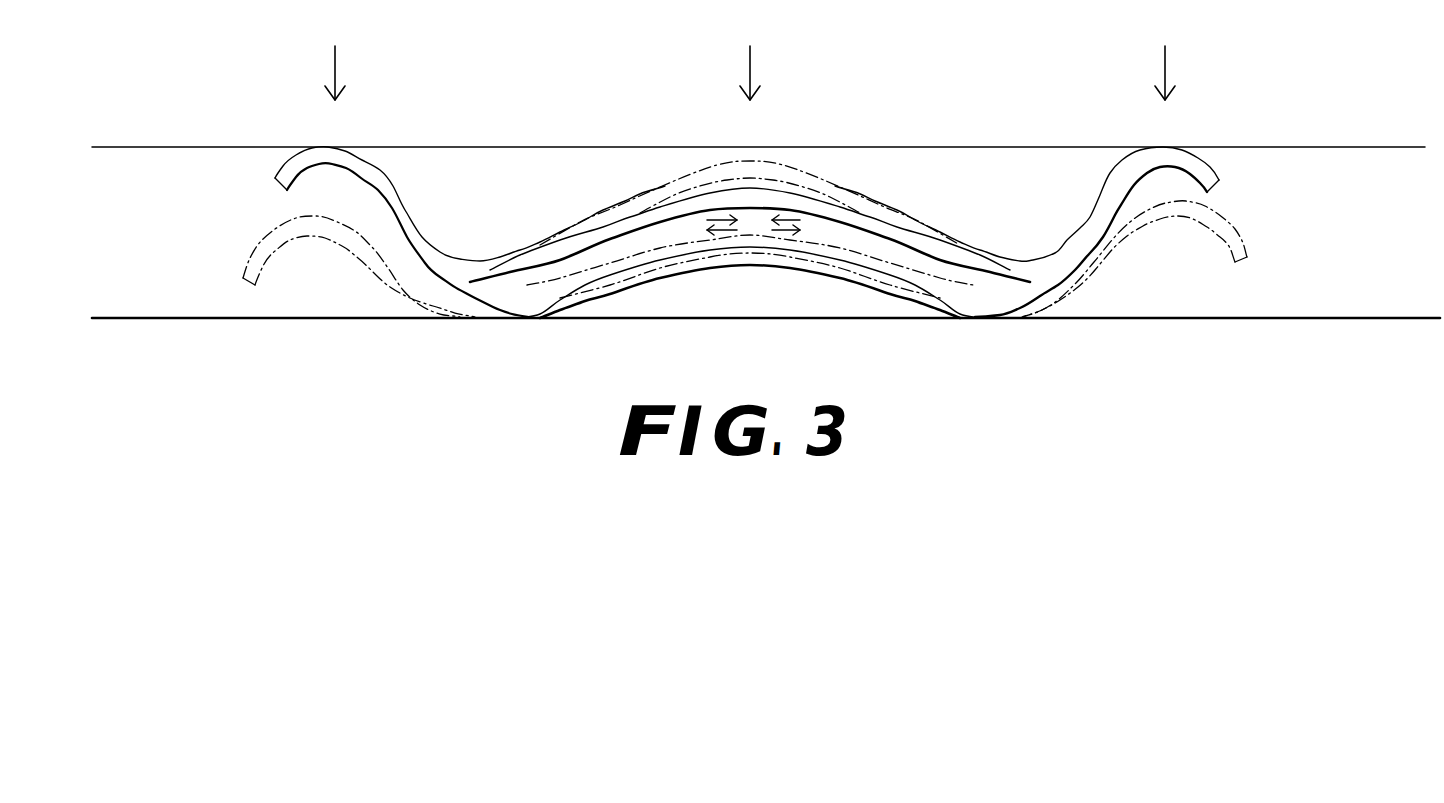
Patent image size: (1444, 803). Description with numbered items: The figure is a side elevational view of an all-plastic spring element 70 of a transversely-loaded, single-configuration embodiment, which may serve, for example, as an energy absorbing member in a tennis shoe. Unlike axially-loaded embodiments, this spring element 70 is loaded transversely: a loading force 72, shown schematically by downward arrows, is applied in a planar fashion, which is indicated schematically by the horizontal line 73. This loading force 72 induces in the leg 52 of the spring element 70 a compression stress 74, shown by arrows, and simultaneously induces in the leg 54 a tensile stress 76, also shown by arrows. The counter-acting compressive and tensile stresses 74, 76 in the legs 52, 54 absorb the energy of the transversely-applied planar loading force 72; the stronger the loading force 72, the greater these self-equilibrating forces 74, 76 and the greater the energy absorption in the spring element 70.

The spring element 70 is at (583, 100).
The loading force 72 is at (336, 65).
The horizontal line 73 is at (1256, 147).
The leg 52 is at (802, 167).
The leg 54 is at (866, 268).
The compression stress 74 is at (728, 218).
The tensile stress 76 is at (786, 232).